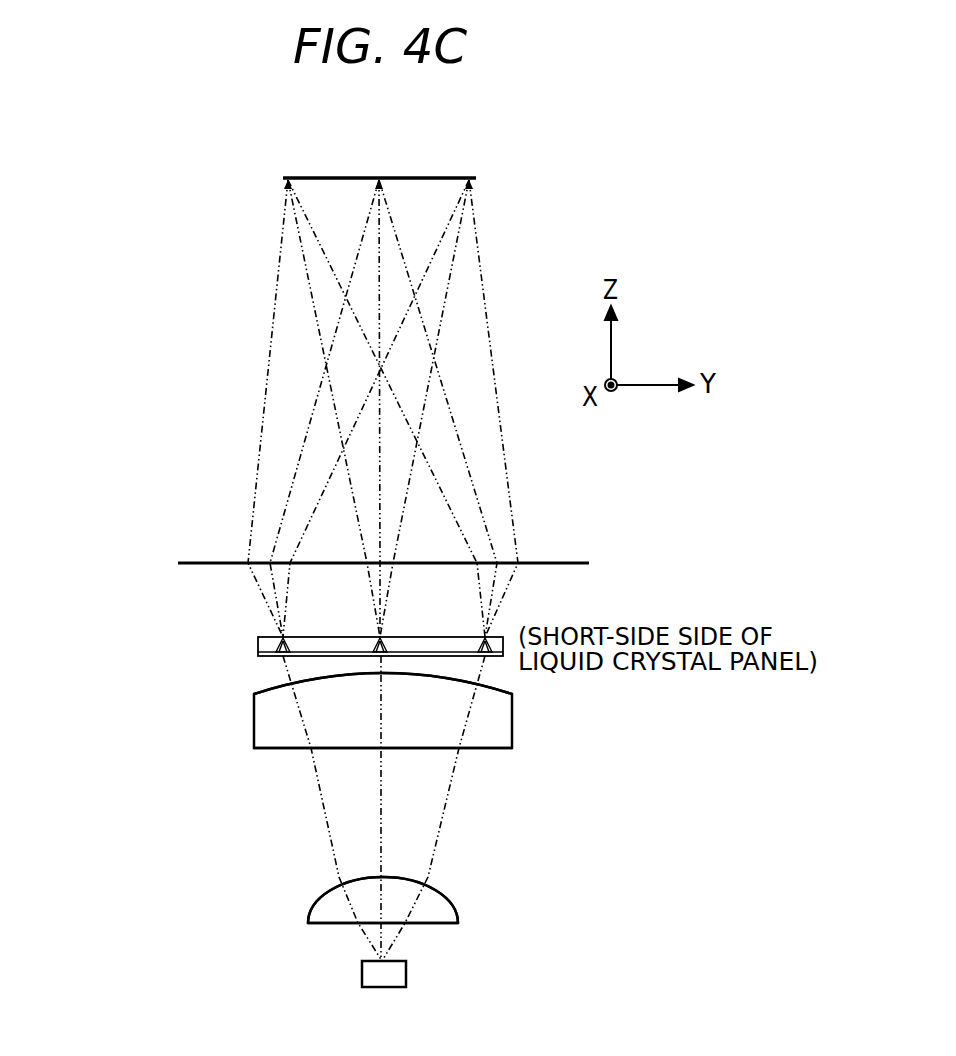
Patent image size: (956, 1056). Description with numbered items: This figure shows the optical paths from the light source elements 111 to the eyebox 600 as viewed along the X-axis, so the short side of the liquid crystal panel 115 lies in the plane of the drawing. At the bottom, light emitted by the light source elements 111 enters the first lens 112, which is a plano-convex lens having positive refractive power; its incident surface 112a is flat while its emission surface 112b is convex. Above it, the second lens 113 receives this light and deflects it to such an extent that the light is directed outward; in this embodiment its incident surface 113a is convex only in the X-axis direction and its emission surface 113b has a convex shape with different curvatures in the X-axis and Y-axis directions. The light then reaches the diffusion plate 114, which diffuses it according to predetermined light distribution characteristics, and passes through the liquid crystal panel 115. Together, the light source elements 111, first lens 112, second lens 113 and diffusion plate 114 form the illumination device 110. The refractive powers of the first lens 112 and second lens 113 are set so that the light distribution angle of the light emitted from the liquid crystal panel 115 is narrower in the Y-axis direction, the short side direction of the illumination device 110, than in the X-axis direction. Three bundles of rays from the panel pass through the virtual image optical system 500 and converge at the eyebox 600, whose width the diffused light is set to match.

The eyebox 600 is at (453, 177).
The virtual image optical system 500 is at (556, 563).
The illumination device 110 is at (150, 650).
The light source elements 111 is at (362, 978).
The first lens 112 is at (308, 917).
The incident surface of first lens 112a is at (445, 925).
The emission surface of first lens 112b is at (445, 900).
The second lens 113 is at (254, 733).
The incident surface of second lens 113a is at (487, 749).
The emission surface of second lens 113b is at (514, 694).
The diffusion plate 114 is at (258, 653).
The liquid crystal panel 115 is at (258, 641).